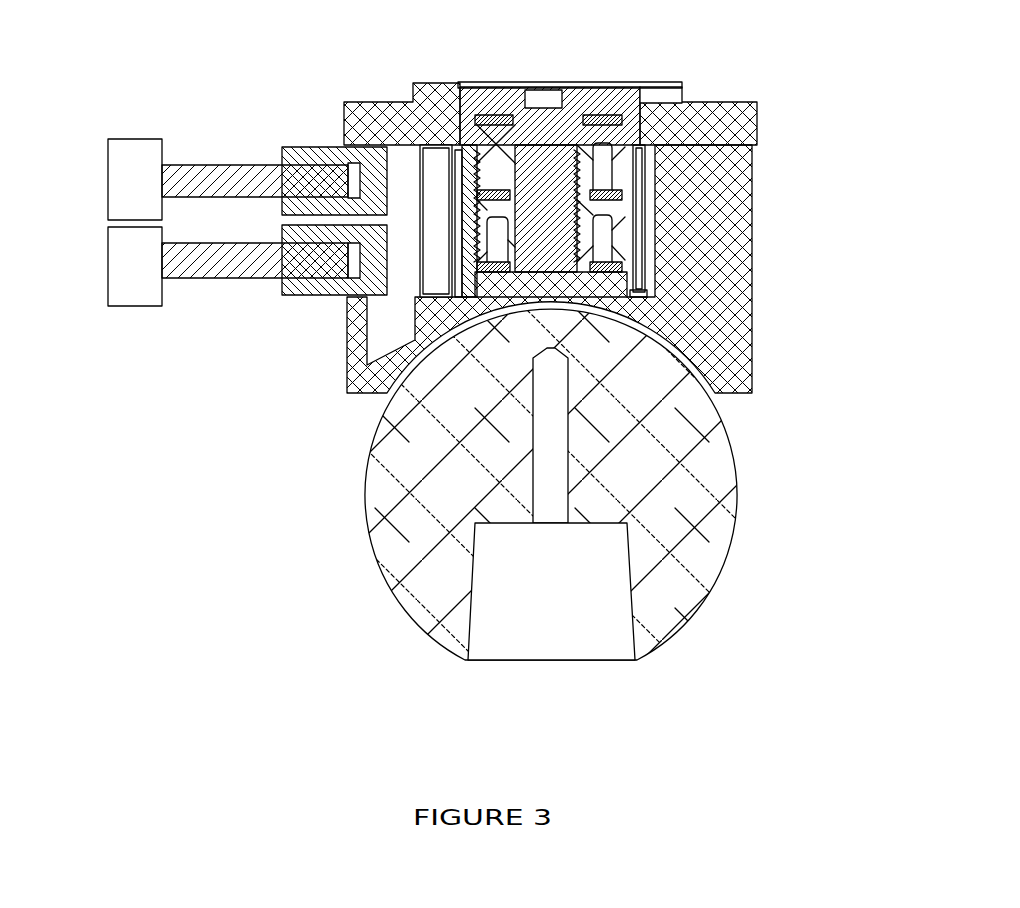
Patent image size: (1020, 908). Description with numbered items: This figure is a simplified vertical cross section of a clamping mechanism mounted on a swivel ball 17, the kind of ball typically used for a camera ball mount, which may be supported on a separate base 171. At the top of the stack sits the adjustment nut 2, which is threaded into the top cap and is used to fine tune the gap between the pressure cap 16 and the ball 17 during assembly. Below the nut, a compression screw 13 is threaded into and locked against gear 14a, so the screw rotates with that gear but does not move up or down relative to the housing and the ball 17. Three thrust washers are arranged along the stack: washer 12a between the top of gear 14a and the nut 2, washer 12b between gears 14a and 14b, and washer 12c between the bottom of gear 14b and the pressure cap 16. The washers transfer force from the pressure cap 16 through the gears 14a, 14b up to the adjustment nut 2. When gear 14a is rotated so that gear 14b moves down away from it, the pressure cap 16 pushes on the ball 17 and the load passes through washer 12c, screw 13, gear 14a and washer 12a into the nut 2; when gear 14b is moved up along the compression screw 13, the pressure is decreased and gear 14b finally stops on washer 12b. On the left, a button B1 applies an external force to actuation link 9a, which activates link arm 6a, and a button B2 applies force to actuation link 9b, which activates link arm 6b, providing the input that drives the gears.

The adjustment nut 2 is at (497, 88).
The compression screw 13 is at (655, 84).
The thrust washer 12a is at (757, 125).
The gear 14a is at (640, 176).
The thrust washer 12b is at (636, 198).
The gear 14b is at (625, 247).
The thrust washer 12c is at (632, 270).
The pressure cap 16 is at (692, 327).
The ball 17 is at (705, 520).
The base 171 is at (560, 628).
The link arm 6a is at (305, 150).
The link arm 6b is at (303, 297).
The actuation link 9a is at (258, 163).
The actuation link 9b is at (258, 279).
The button B1 is at (106, 185).
The button B2 is at (106, 272).